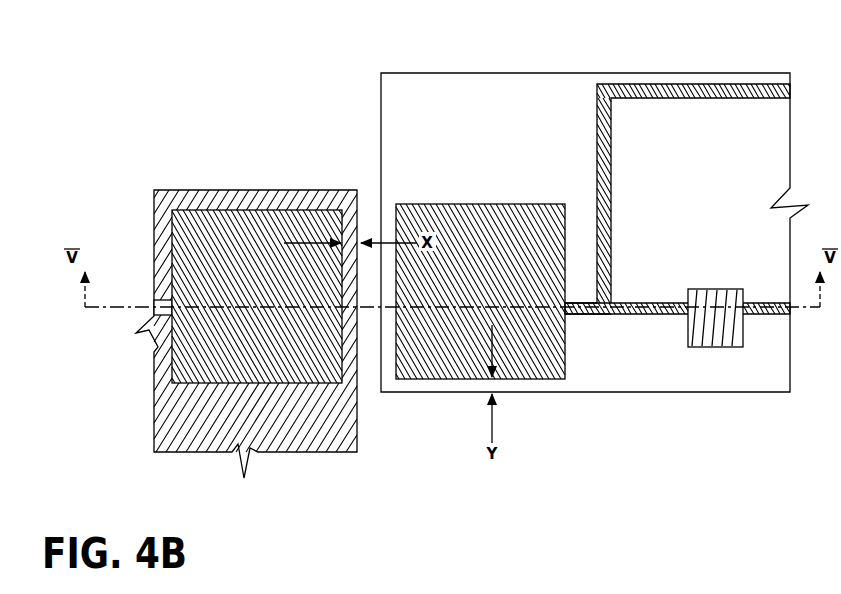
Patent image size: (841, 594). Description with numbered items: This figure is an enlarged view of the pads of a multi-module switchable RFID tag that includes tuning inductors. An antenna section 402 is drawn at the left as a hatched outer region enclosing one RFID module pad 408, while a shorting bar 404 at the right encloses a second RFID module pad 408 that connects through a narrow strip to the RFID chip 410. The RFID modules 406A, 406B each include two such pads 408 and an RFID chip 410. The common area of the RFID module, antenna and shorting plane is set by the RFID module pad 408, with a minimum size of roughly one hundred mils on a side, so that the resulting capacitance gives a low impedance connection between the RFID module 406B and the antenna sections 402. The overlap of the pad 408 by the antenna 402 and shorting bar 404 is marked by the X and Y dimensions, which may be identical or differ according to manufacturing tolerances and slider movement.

The antenna section 402 is at (181, 190).
The shorting bar 404 is at (636, 73).
The RFID module 406A is at (572, 351).
The RFID module 406B is at (141, 352).
The RFID module pad 408 is at (257, 204).
The RFID chip 410 is at (717, 289).